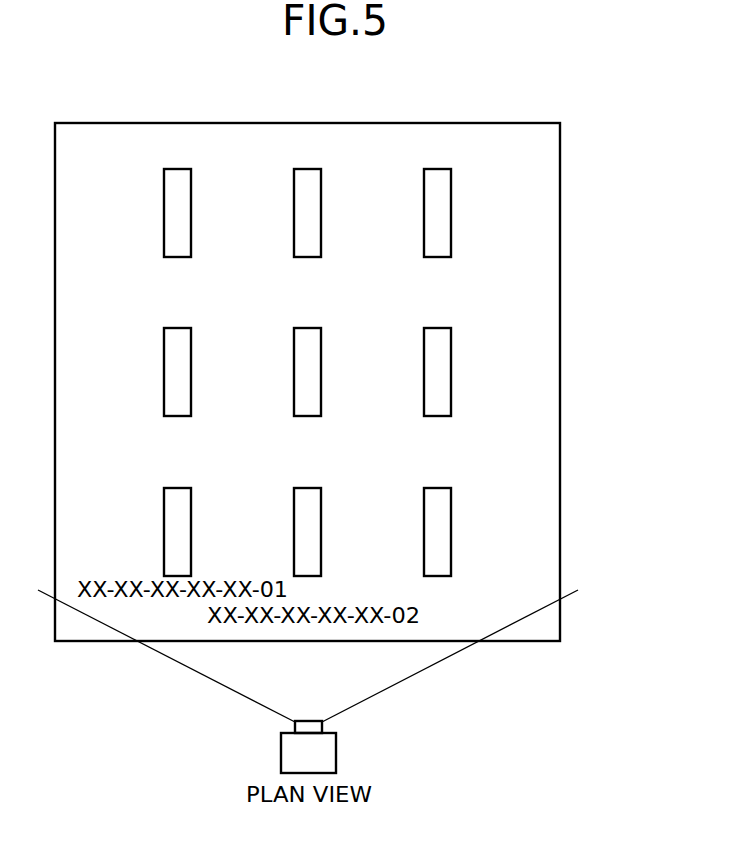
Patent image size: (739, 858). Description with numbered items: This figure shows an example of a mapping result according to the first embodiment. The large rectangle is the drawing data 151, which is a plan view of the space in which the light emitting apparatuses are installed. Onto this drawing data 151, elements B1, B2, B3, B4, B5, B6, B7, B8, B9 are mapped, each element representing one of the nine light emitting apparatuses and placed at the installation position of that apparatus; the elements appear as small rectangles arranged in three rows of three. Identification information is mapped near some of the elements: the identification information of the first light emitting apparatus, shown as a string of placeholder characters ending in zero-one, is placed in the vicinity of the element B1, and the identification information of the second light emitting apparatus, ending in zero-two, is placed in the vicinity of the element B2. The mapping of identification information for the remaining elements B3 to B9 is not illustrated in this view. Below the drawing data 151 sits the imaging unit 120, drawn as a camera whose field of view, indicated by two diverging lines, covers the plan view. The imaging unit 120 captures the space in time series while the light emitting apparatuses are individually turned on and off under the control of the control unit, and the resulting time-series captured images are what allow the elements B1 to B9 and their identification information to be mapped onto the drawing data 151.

The drawing data 151 is at (485, 143).
The element B1 is at (191, 531).
The element B2 is at (321, 531).
The element B3 is at (451, 531).
The element B4 is at (191, 371).
The element B5 is at (321, 371).
The element B6 is at (451, 371).
The element B7 is at (191, 212).
The element B8 is at (321, 212).
The element B9 is at (451, 212).
The imaging unit 120 is at (320, 753).